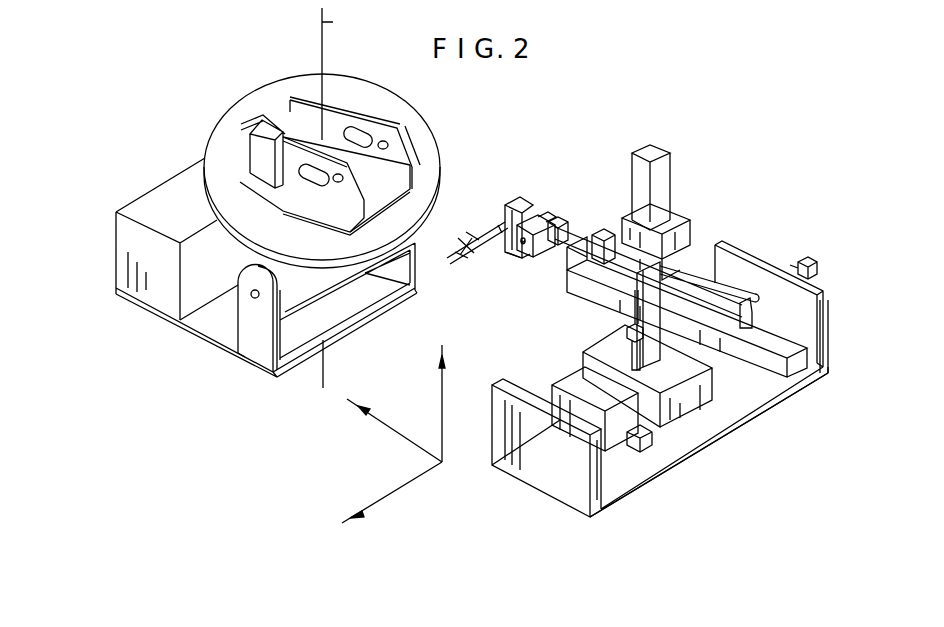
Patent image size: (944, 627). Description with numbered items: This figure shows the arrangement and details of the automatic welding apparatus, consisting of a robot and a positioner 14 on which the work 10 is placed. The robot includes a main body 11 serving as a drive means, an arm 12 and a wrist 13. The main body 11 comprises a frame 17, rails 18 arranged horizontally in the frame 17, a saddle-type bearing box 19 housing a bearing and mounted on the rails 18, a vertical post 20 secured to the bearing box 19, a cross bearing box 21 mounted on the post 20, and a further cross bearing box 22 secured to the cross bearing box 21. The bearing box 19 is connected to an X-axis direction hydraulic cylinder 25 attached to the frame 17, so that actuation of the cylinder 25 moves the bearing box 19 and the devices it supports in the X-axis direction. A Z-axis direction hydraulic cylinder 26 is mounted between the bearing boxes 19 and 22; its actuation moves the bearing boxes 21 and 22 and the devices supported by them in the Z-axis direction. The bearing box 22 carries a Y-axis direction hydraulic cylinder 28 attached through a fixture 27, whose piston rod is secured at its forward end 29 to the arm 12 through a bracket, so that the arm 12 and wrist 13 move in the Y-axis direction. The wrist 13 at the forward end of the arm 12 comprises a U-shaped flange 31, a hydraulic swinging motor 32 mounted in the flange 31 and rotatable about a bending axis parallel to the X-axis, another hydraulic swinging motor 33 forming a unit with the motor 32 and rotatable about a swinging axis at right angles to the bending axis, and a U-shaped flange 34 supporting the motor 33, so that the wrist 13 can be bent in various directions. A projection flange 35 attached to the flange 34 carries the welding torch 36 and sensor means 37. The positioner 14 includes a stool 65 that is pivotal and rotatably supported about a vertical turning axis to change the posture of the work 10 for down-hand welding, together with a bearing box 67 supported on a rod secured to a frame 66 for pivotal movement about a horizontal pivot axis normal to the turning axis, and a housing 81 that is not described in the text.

The work 10 is at (233, 132).
The main body 11 is at (700, 417).
The arm 12 is at (818, 333).
The wrist 13 is at (552, 208).
The positioner 14 is at (178, 150).
The frame 17 is at (665, 466).
The rails 18 is at (607, 450).
The saddle-type bearing box 19 is at (702, 388).
The vertical post 20 is at (662, 165).
The cross bearing box 21 is at (663, 247).
The cross bearing box 22 is at (613, 280).
The X-axis direction hydraulic cylinder 25 is at (800, 265).
The Z-axis direction hydraulic cylinder 26 is at (628, 350).
The fixture 27 is at (617, 235).
The Y-axis direction hydraulic cylinder 28 is at (693, 287).
The forward end of piston rod 29 is at (566, 219).
The U-shaped flange 31 is at (528, 244).
The hydraulic swinging motor 32 is at (538, 222).
The hydraulic swinging motor 33 is at (512, 218).
The U-shaped flange 34 is at (522, 248).
The projection flange 35 is at (495, 267).
The welding torch 36 is at (490, 226).
The sensor means 37 is at (466, 258).
The stool 65 is at (415, 118).
The frame 66 is at (255, 347).
The bearing box 67 is at (247, 255).
The drive housing 81 is at (165, 180).